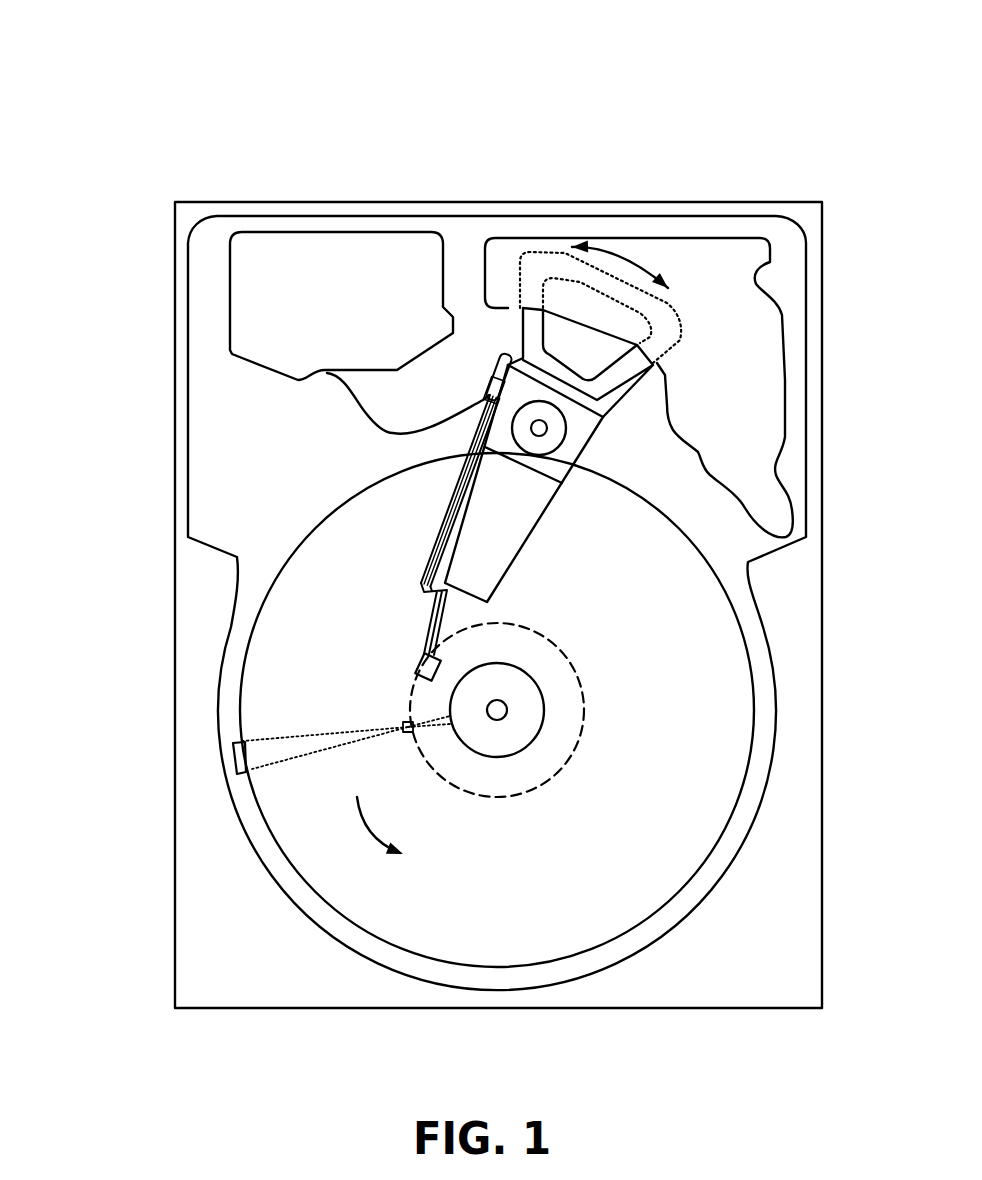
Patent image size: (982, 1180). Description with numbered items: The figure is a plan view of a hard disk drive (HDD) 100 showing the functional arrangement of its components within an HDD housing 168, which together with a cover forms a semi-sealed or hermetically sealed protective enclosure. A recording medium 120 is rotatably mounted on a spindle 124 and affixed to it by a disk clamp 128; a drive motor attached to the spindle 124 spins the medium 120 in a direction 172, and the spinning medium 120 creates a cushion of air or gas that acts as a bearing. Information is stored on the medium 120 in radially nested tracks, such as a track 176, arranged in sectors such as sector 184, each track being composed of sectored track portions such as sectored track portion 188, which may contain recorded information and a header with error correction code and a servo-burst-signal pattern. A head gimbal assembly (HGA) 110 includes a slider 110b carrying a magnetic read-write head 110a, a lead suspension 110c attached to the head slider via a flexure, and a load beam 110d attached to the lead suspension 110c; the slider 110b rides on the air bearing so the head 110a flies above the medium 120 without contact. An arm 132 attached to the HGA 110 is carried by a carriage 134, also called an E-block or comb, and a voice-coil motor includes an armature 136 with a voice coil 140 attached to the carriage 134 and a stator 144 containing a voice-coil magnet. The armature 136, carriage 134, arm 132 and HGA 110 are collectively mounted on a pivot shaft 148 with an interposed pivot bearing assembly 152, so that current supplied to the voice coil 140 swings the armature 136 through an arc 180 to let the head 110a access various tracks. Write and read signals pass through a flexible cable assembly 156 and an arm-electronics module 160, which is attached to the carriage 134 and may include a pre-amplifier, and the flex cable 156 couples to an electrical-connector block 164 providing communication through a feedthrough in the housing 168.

The hard disk drive 100 is at (100, 78).
The HDD housing 168 is at (803, 214).
The electrical-connector block 164 is at (256, 303).
The stator 144 is at (750, 331).
The flexible cable assembly 156 is at (357, 405).
The arm-electronics module 160 is at (490, 396).
The armature 136 is at (523, 357).
The voice coil 140 is at (533, 320).
The arc 180 is at (616, 262).
The arm 132 is at (490, 545).
The carriage 134 is at (572, 470).
The pivot bearing assembly 152 is at (552, 445).
The pivot shaft 148 is at (546, 428).
The head gimbal assembly 110 is at (268, 538).
The magnetic read-write head 110a is at (413, 673).
The slider 110b is at (427, 653).
The lead suspension 110c is at (453, 603).
The load beam 110d is at (423, 587).
The sectored track portion 188 is at (405, 727).
The sector 184 is at (232, 757).
The recording medium 120 is at (680, 665).
The track 176 is at (577, 668).
The disk clamp 128 is at (522, 737).
The spindle 124 is at (503, 711).
The direction 172 is at (383, 834).